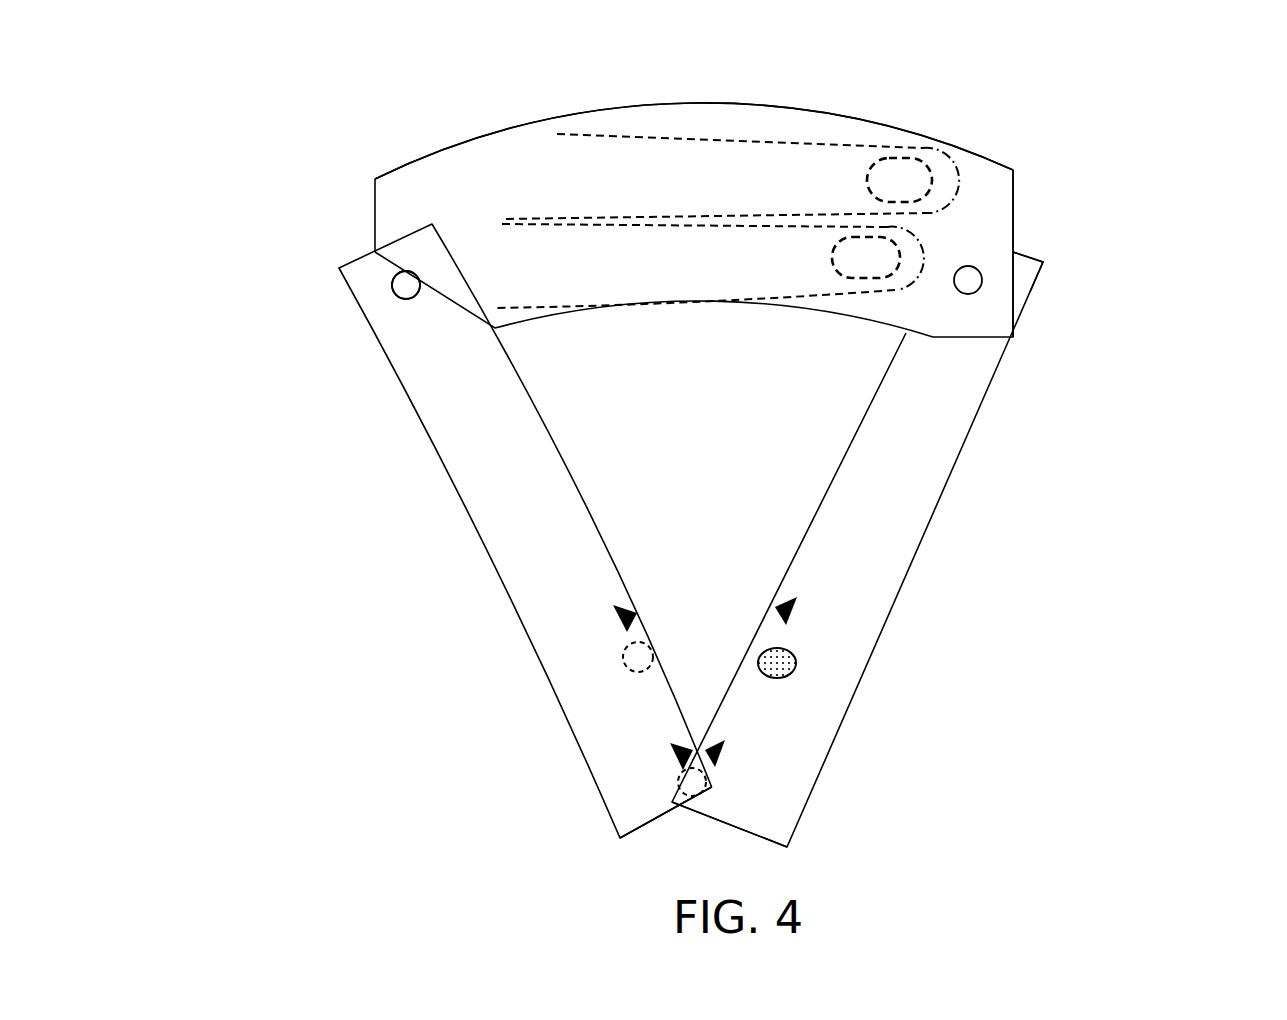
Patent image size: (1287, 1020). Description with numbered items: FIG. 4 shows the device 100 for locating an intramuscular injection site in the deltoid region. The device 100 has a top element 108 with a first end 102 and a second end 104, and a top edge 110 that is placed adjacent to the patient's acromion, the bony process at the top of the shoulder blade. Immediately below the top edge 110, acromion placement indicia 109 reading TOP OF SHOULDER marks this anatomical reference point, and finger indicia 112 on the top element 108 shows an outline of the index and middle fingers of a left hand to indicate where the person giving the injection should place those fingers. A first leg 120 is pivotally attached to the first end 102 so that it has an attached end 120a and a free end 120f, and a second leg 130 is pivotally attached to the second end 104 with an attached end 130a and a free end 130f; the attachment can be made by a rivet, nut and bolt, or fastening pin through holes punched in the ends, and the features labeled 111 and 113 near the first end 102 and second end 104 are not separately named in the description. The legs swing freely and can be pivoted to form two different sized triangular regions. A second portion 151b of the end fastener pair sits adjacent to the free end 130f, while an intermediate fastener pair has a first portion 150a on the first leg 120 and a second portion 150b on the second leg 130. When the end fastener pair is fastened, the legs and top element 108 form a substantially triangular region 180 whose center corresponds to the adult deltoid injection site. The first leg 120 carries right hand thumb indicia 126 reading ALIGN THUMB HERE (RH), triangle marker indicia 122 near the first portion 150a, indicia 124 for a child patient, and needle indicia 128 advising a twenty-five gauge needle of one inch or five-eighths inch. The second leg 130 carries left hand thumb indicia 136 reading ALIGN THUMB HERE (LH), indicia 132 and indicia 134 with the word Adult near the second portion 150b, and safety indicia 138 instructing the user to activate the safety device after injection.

The device 100 is at (318, 412).
The first end 102 is at (1010, 213).
The second end 104 is at (375, 200).
The top element 108 is at (968, 178).
The acromion placement indicia 109 is at (607, 122).
The top edge 110 is at (757, 113).
The right aperture 111 is at (975, 273).
The finger indicia 112 is at (617, 182).
The left aperture 113 is at (413, 283).
The first leg 120 is at (842, 695).
The attached end 120a is at (1022, 320).
The free end 120f is at (793, 832).
The indicia 122 is at (780, 590).
The indicia 124 is at (715, 733).
The right hand thumb indicia 126 is at (840, 473).
The needle indicia 128 is at (937, 510).
The second leg 130 is at (587, 734).
The attached end 130a is at (368, 302).
The free end 130f is at (627, 830).
The indicia 132 is at (625, 598).
The indicia 134 is at (633, 750).
The left hand thumb indicia 136 is at (547, 445).
The safety indicia 138 is at (466, 492).
The first portion of intermediate fastener pair 150a is at (777, 680).
The second portion of intermediate fastener pair 150b is at (650, 645).
The second portion of end fastener pair 151b is at (683, 795).
The substantially triangular region 180 is at (757, 402).